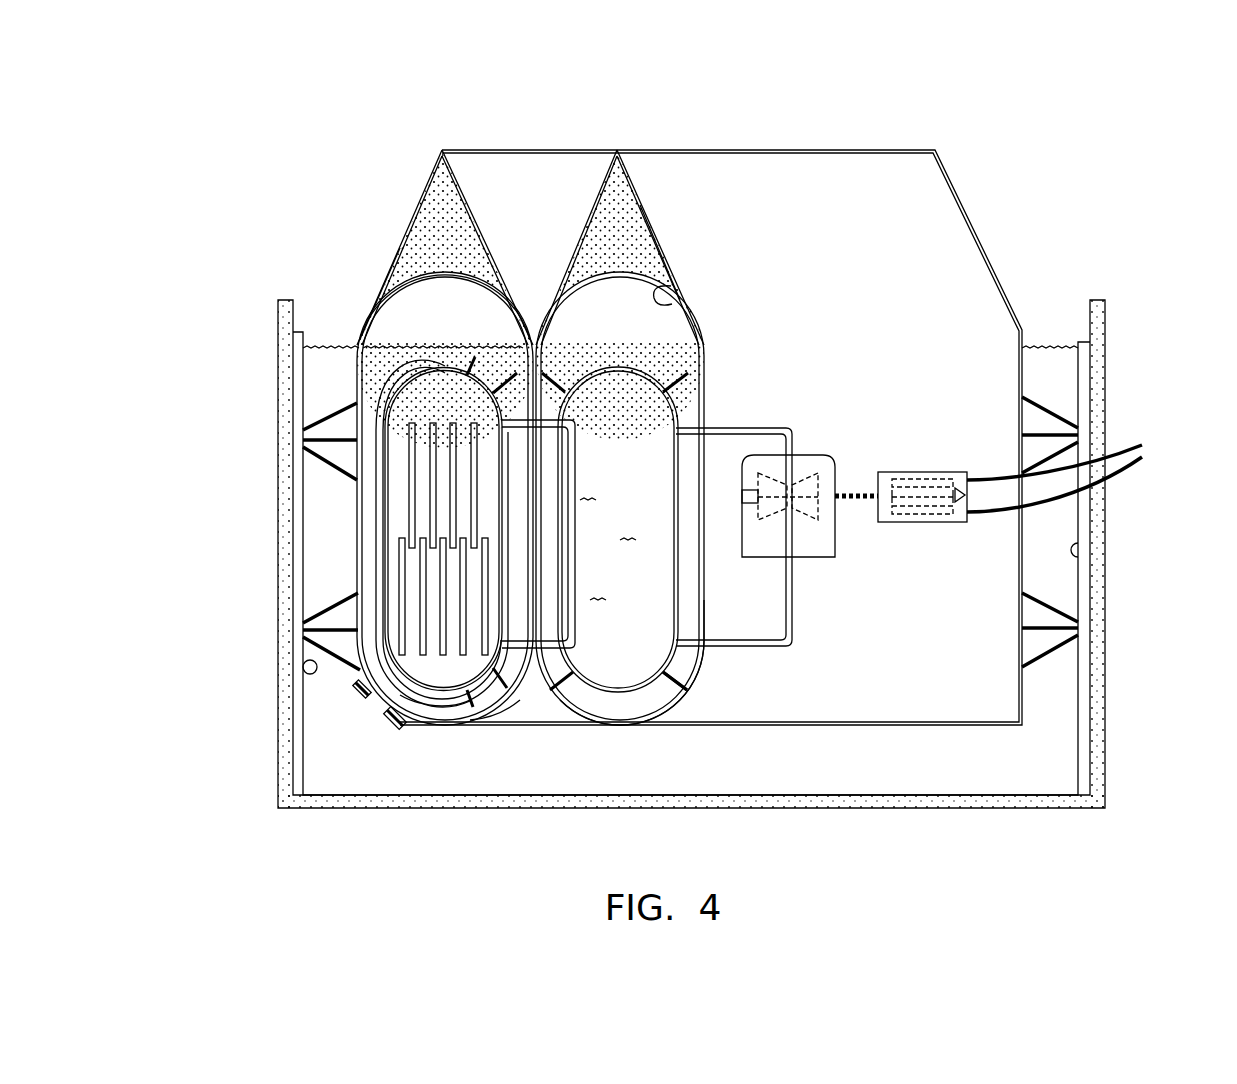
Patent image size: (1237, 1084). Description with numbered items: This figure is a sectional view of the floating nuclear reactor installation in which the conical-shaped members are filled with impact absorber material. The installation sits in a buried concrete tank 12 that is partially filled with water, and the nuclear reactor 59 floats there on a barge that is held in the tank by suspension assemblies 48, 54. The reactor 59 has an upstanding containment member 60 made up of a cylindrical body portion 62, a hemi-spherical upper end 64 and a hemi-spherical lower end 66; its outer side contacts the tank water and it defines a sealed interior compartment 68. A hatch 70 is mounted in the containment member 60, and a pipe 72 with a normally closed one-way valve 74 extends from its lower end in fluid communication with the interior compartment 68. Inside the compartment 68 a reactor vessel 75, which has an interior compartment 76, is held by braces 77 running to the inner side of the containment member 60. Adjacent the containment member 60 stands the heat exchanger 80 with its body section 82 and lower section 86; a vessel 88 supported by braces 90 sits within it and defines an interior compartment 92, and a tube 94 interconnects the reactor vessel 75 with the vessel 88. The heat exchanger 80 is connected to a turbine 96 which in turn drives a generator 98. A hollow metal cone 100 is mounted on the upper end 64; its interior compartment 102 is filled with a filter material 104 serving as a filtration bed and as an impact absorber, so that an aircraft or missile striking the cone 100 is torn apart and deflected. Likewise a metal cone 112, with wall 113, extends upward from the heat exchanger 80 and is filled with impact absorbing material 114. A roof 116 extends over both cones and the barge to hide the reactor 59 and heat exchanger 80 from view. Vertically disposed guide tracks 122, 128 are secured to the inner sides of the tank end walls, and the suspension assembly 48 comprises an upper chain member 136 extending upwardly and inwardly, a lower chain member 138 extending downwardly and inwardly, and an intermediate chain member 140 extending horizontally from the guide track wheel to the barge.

The concrete tank 12 is at (1115, 310).
The upper suspension assembly 48 is at (1053, 393).
The upper suspension assembly 54 is at (308, 420).
The nuclear reactor 59 is at (353, 531).
The containment member 60 is at (352, 376).
The cylindrical body portion 62 is at (357, 492).
The hemi-spherical upper end 64 is at (410, 283).
The hemi-spherical lower end 66 is at (470, 717).
The interior compartment 68 is at (436, 331).
The hatch 70 is at (353, 689).
The pipe 72 is at (410, 705).
The one-way valve 74 is at (390, 708).
The reactor vessel 75 is at (390, 567).
The interior compartment 76 is at (445, 713).
The braces 77 is at (503, 723).
The heat exchanger 80 is at (724, 322).
The body section 82 is at (705, 455).
The lower section 86 is at (672, 700).
The vessel 88 is at (633, 705).
The braces 90 is at (680, 676).
The interior compartment 92 is at (710, 308).
The tube 94 is at (788, 428).
The turbine 96 is at (813, 457).
The generator 98 is at (932, 523).
The hollow metal cone 100 is at (410, 217).
The interior compartment 102 is at (404, 268).
The filter material 104 is at (460, 213).
The metal cone 112 is at (658, 227).
The cone wall 113 is at (645, 208).
The impact absorbing material 114 is at (664, 253).
The roof 116 is at (903, 147).
The guide track 122 is at (1080, 551).
The guide track 128 is at (317, 675).
The upper chain member 136 is at (1065, 430).
The lower chain member 138 is at (1073, 487).
The intermediate chain member 140 is at (1063, 466).